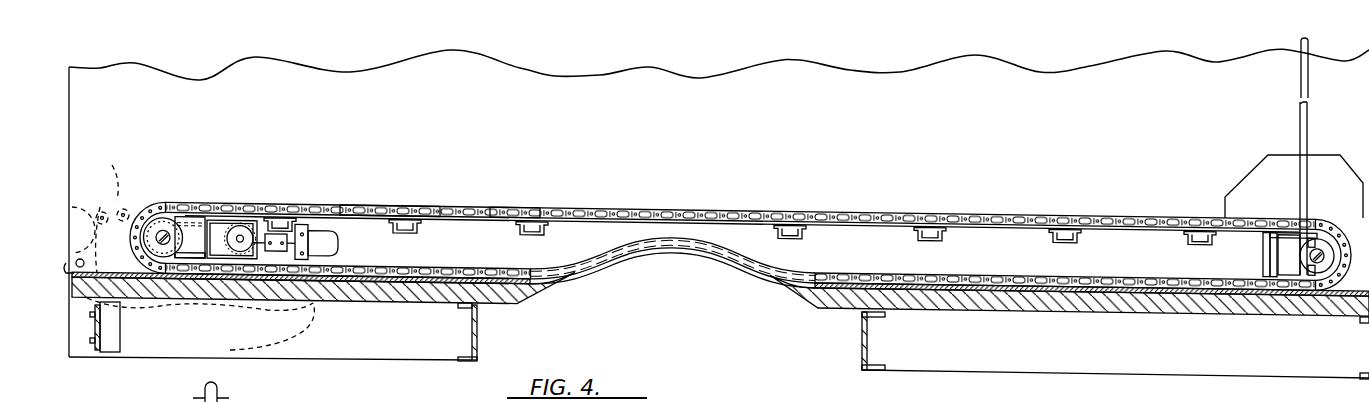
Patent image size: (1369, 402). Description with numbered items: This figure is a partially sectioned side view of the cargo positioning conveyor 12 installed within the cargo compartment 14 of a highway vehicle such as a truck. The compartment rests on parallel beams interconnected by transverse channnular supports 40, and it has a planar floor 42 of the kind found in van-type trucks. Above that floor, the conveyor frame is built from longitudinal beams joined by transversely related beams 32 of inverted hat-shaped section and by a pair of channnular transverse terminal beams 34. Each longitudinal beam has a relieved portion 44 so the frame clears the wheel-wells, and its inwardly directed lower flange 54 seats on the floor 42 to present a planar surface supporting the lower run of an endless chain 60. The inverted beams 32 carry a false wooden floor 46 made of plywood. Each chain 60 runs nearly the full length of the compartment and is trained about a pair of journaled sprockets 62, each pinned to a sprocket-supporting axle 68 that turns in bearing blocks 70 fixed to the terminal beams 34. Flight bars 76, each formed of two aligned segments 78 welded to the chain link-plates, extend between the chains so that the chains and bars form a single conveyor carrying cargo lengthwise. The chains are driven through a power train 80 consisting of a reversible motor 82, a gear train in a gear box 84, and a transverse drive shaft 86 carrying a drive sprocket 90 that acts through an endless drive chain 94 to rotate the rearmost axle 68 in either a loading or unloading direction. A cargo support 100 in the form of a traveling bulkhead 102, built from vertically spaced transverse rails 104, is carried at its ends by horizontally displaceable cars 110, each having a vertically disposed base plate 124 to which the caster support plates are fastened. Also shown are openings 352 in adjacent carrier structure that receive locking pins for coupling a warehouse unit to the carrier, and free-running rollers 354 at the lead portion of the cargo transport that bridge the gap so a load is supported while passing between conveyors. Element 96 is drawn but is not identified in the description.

The cargo positioning conveyor 12 is at (883, 204).
The cargo compartment 14 is at (817, 82).
The transversely related beams 32 is at (522, 229).
The transverse terminal beams 34 is at (197, 252).
The transverse channnular supports 40 is at (109, 357).
The planar floor 42 is at (1138, 290).
The relieved portion 44 is at (673, 256).
The wooden floor 46 is at (748, 214).
The lower flange 54 is at (1183, 289).
The endless chain 60 is at (1083, 282).
The sprockets 62 is at (148, 222).
The sprocket-supporting axle 68 is at (183, 226).
The bearing blocks 70 is at (156, 229).
The flight bars 76 is at (506, 202).
The aligned segments 78 is at (435, 205).
The power train 80 is at (312, 222).
The reversible motor 82 is at (340, 246).
The gear box 84 is at (249, 240).
The drive shaft 86 is at (267, 231).
The drive sprocket 90 is at (238, 231).
The endless drive chain 94 is at (218, 228).
The chain guard 96 is at (128, 265).
The cargo support 100 is at (1275, 149).
The traveling bulkhead 102 is at (1301, 133).
The transversely extended rails 104 is at (1302, 40).
The horizontally displaceable cars 110 is at (1281, 181).
The base plate 124 is at (1297, 200).
The openings 352 is at (80, 267).
The free-running rollers 354 is at (99, 204).